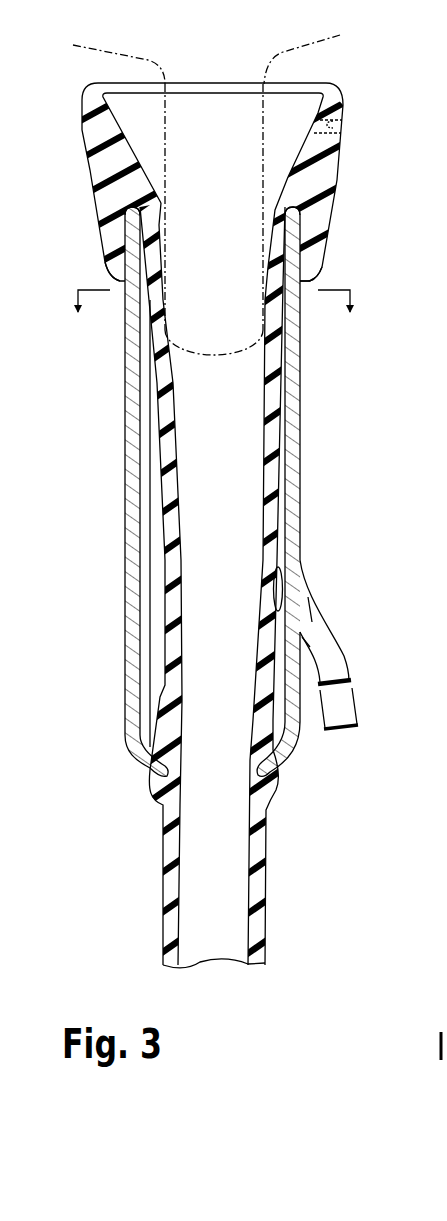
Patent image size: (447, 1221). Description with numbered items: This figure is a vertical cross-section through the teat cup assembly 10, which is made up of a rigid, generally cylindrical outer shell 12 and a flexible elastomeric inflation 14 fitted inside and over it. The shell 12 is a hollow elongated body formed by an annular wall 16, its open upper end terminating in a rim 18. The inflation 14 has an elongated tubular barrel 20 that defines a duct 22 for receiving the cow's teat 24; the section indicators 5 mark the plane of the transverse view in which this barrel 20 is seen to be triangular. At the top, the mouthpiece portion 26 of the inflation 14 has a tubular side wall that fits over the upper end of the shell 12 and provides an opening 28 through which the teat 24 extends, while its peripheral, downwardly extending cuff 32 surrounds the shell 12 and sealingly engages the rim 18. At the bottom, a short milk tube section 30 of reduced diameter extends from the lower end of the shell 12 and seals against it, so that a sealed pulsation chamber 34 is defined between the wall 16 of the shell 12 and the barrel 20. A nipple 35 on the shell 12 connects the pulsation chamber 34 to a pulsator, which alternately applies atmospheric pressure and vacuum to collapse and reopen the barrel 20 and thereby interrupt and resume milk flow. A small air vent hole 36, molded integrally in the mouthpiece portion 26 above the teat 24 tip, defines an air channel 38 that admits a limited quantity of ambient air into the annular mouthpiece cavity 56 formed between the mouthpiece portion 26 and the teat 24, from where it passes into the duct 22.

The teat cup assembly 10 is at (62, 78).
The outer shell 12 is at (221, 485).
The inflation 14 is at (236, 586).
The annular wall 16 is at (133, 412).
The rim 18 is at (139, 207).
The barrel 20 is at (286, 430).
The duct 22 is at (199, 676).
The teat 24 is at (270, 352).
The mouthpiece portion 26 is at (235, 173).
The opening 28 is at (263, 84).
The short milk tube section 30 is at (160, 885).
The cuff 32 is at (112, 282).
The pulsation chamber 34 is at (151, 645).
The nipple 35 is at (330, 656).
The air vent hole 36 is at (344, 128).
The air channel 38 is at (335, 121).
The mouthpiece cavity 56 is at (282, 124).
The section line 5 is at (213, 309).